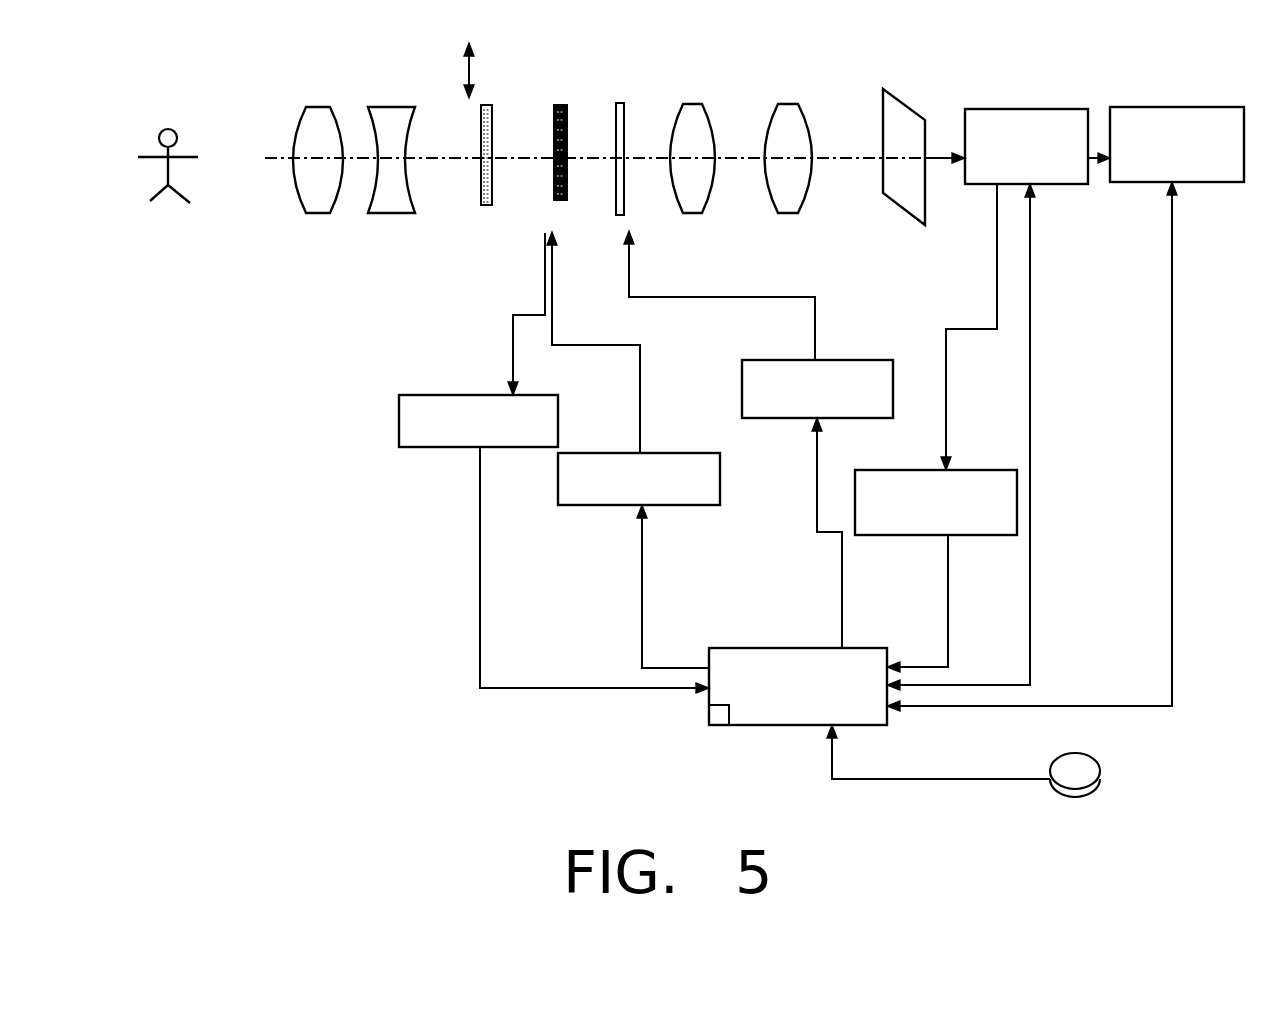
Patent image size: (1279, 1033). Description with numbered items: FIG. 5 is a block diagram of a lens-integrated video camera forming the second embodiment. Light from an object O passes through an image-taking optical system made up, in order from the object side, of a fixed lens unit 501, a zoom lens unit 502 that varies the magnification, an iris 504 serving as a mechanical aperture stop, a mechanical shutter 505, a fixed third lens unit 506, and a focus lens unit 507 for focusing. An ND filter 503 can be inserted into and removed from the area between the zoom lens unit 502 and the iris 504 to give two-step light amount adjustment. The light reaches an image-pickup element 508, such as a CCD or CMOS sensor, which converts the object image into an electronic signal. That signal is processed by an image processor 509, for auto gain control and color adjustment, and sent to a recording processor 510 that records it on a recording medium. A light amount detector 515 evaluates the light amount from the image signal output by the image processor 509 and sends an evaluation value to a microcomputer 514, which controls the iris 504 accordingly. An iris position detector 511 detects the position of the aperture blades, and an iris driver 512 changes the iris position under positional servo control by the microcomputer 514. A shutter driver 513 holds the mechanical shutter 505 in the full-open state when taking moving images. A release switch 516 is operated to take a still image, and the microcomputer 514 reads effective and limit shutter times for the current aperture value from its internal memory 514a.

The object O is at (159, 134).
The fixed lens unit 501 is at (318, 115).
The zoom lens unit 502 is at (388, 116).
The ND filter 503 is at (491, 108).
The iris 504 is at (566, 113).
The mechanical shutter 505 is at (624, 115).
The fixed third lens unit 506 is at (690, 113).
The focus lens unit 507 is at (790, 112).
The image-pickup element 508 is at (910, 120).
The image processor 509 is at (1070, 109).
The recording processor 510 is at (1215, 107).
The iris position detector 511 is at (548, 433).
The iris driver 512 is at (680, 453).
The shutter driver 513 is at (862, 370).
The microcomputer 514 is at (882, 648).
The memory 514a is at (715, 719).
The light amount detector 515 is at (975, 470).
The release switch 516 is at (1100, 772).